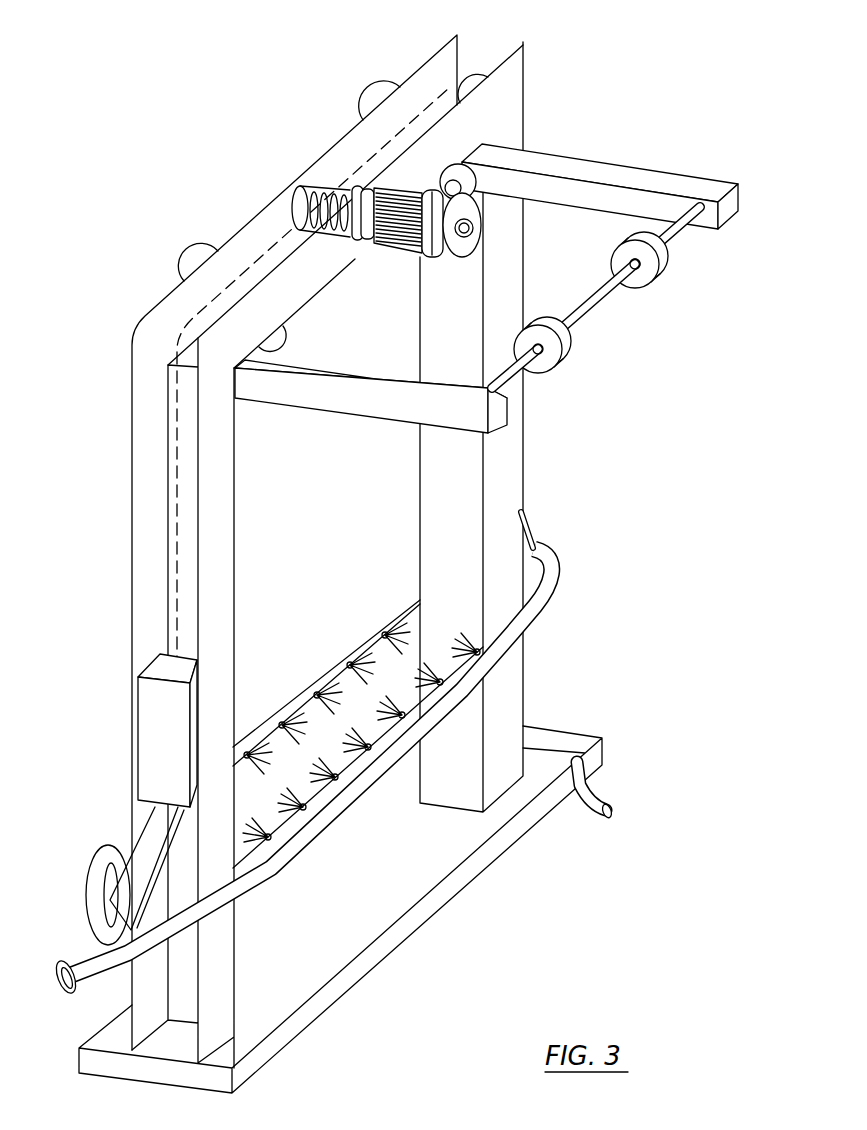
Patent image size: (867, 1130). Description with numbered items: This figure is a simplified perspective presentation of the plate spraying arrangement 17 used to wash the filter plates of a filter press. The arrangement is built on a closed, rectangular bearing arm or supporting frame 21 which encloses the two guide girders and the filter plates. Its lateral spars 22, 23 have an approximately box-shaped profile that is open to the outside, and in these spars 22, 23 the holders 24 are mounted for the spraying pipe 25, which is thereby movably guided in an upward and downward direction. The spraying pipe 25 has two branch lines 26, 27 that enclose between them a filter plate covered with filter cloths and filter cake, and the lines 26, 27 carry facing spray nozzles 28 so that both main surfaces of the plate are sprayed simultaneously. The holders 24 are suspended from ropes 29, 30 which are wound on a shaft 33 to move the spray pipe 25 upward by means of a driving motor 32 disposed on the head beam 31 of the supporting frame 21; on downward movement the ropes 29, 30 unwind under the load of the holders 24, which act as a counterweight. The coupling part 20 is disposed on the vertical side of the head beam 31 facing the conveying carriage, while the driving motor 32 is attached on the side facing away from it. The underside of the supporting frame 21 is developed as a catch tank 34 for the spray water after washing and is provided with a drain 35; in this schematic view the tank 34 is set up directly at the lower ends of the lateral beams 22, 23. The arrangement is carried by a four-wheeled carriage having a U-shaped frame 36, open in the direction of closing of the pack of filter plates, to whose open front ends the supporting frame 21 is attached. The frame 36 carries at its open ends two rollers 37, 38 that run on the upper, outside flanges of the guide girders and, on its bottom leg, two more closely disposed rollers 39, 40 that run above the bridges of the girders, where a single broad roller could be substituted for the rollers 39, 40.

The plate spraying arrangement 17 is at (227, 185).
The electromagnetic coupling part 20 is at (190, 268).
The bearing arm 21 is at (124, 526).
The lateral spar 22 is at (137, 634).
The lateral spar 23 is at (515, 436).
The holder 24 is at (150, 762).
The spraying pipe 25 is at (473, 685).
The branch line 26 is at (365, 643).
The branch line 27 is at (352, 778).
The spray nozzle 28 is at (335, 692).
The rope 29 is at (176, 465).
The rope 30 is at (479, 62).
The head beam 31 is at (284, 203).
The driving motor 32 is at (403, 245).
The shaft 33 is at (337, 200).
The catch tank 34 is at (452, 893).
The drain 35 is at (600, 795).
The U-shaped frame 36 is at (607, 167).
The roller 37 is at (468, 185).
The roller 38 is at (283, 344).
The roller 39 is at (650, 278).
The roller 40 is at (553, 359).